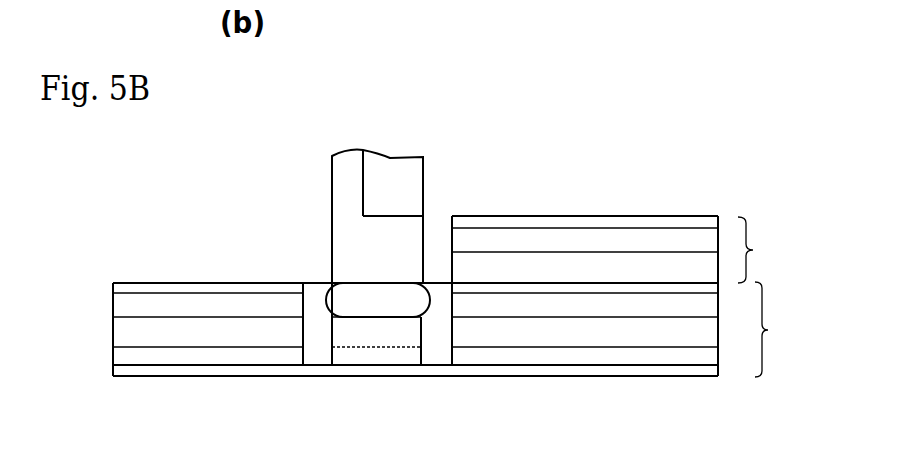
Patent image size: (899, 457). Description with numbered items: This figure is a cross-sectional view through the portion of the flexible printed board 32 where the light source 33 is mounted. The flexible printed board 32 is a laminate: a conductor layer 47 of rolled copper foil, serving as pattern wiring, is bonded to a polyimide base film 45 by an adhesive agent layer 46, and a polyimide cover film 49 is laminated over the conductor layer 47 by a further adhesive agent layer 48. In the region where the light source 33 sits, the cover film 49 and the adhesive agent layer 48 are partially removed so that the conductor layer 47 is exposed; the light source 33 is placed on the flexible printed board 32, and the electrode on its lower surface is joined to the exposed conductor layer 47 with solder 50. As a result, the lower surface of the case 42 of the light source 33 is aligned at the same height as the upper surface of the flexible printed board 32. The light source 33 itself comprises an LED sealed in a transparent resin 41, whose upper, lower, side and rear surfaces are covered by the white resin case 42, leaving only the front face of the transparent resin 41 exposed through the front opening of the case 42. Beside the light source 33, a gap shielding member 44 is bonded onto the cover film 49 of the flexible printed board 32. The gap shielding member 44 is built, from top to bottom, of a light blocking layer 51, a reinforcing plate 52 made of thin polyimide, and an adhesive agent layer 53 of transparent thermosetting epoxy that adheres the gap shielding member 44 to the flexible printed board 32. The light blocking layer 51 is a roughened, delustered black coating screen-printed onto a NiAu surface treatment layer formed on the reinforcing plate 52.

The flexible printed board 32 is at (462, 329).
The light source 33 is at (332, 198).
The transparent resin 41 is at (403, 182).
The case 42 is at (349, 178).
The gap shielding member 44 is at (630, 249).
The base film 45 is at (595, 370).
The adhesive agent layer 46 is at (387, 357).
The conductor layer 47 is at (365, 332).
The adhesive agent layer 48 is at (228, 308).
The cover film 49 is at (190, 287).
The solder 50 is at (350, 298).
The light blocking layer 51 is at (506, 227).
The reinforcing plate 52 is at (573, 243).
The adhesive agent layer 53 is at (640, 268).